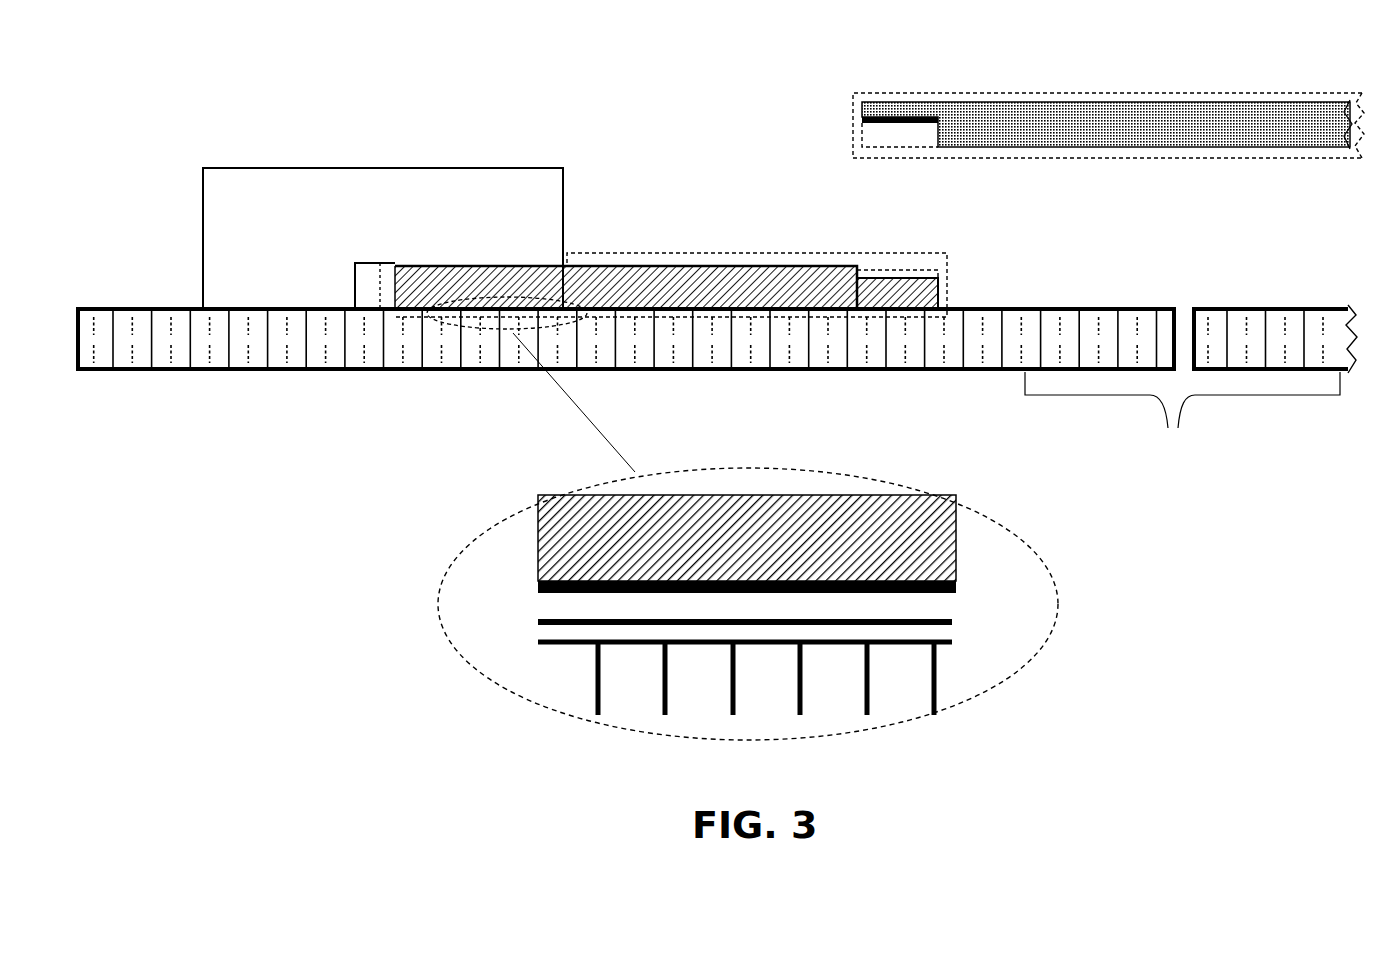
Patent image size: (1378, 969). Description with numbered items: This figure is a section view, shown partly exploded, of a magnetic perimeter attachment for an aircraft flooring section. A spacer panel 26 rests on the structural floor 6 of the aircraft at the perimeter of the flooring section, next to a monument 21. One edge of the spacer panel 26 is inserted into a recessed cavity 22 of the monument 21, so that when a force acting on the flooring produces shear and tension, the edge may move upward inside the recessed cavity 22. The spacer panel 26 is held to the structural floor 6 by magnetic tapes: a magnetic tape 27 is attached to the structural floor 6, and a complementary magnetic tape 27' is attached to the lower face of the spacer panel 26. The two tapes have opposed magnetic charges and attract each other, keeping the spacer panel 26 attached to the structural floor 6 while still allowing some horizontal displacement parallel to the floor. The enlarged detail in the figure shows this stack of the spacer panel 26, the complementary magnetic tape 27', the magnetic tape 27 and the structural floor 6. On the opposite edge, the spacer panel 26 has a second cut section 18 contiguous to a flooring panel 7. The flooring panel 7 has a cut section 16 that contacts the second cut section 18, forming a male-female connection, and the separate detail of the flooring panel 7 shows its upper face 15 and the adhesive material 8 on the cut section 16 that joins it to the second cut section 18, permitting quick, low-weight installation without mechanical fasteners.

The structural floor 6 is at (124, 304).
The flooring panel 7 is at (957, 88).
The adhesive material 8 is at (858, 122).
The upper face 15 is at (1150, 100).
The cut section 16 is at (938, 148).
The second cut section 18 is at (950, 261).
The monument 21 is at (252, 160).
The recessed cavity 22 is at (374, 288).
The spacer panel 26 is at (720, 250).
The magnetic tape 27 is at (787, 678).
The complementary magnetic tape 27' is at (824, 603).